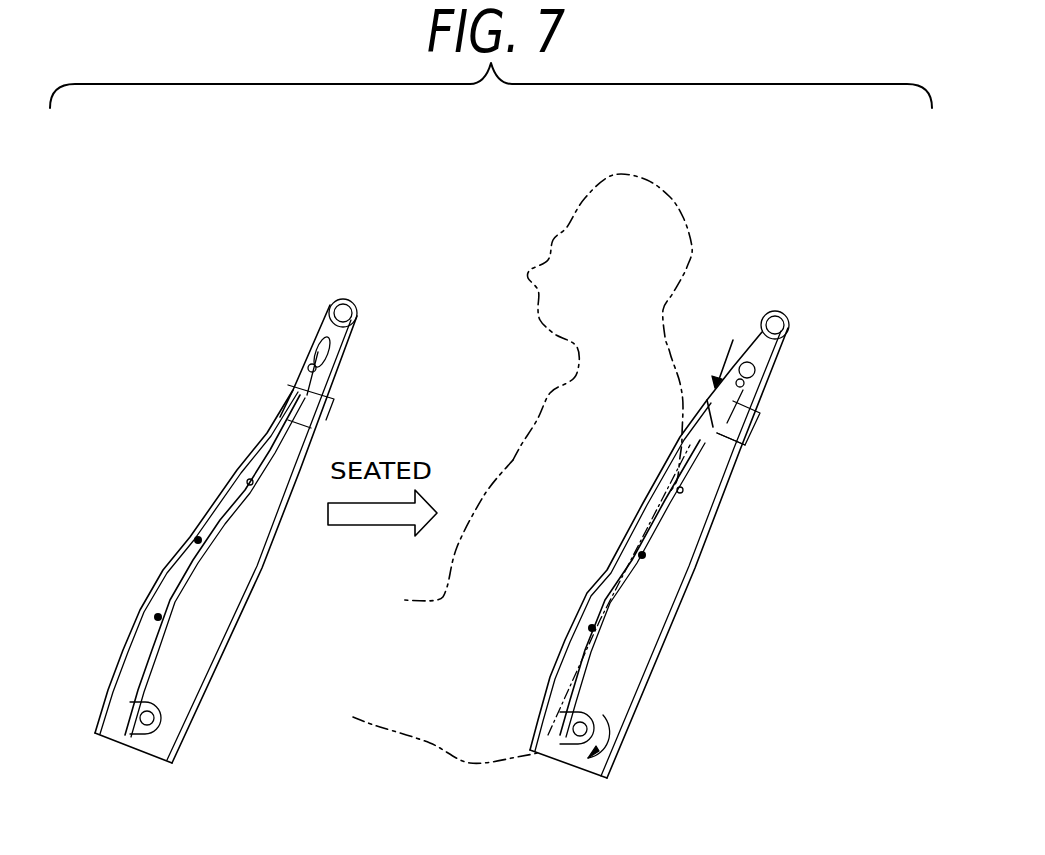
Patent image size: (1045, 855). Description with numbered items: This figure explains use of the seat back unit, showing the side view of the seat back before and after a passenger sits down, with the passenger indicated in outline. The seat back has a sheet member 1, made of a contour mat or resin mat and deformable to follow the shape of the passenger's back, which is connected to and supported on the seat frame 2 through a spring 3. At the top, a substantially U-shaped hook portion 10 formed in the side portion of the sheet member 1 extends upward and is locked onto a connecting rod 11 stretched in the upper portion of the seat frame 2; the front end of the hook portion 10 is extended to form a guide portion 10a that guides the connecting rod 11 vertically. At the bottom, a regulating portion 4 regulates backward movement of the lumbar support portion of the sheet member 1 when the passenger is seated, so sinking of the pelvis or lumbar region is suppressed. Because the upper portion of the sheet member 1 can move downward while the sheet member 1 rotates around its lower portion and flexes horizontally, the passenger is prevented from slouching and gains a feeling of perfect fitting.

The sheet member 1 is at (175, 588).
The seat frame 2 is at (222, 648).
The spring 3 is at (197, 540).
The regulating portion 4 is at (142, 733).
The hook portion 10 is at (303, 391).
The guide portion 10a is at (750, 422).
The connecting rod 11 is at (330, 352).